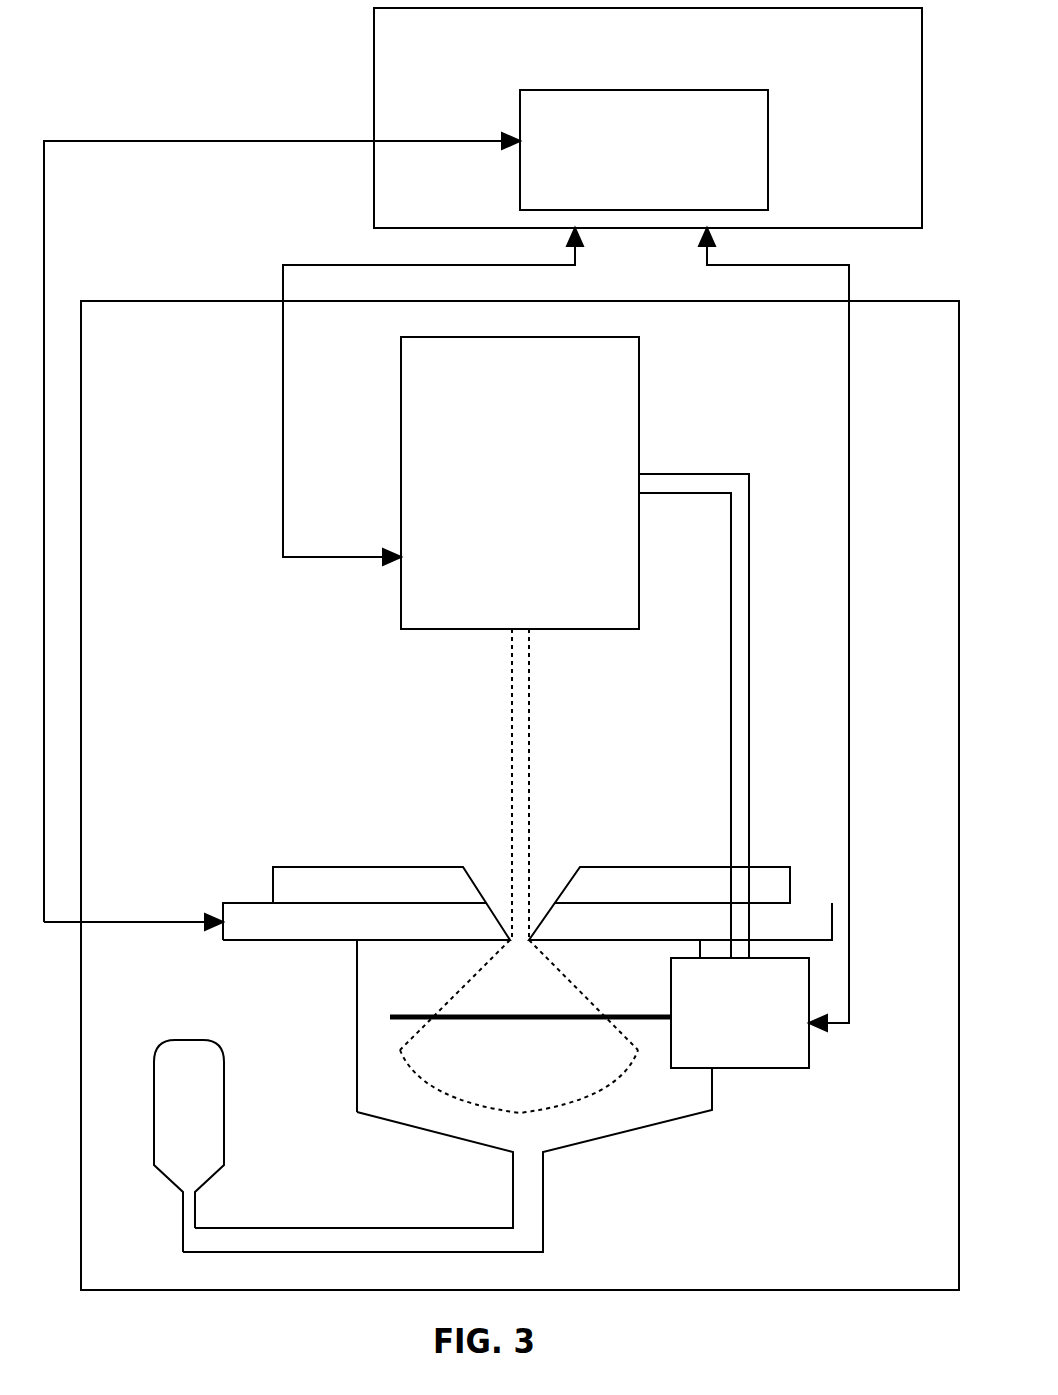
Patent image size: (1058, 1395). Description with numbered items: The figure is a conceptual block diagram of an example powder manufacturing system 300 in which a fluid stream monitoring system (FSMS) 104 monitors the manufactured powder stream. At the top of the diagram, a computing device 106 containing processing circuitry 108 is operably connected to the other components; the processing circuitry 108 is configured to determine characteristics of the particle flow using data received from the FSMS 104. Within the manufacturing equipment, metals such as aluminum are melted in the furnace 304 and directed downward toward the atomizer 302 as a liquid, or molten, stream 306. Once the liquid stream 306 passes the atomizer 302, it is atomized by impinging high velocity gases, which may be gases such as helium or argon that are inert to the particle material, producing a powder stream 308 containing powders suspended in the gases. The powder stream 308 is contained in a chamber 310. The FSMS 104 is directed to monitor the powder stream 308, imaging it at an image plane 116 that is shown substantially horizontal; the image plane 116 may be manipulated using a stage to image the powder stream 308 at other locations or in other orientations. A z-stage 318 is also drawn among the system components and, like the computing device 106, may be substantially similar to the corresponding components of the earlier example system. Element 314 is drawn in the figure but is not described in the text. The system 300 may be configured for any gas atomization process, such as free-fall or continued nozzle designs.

The powder manufacturing system 300 is at (138, 51).
The computing device 106 is at (630, 73).
The processing circuitry 108 is at (624, 191).
The atomizer 302 is at (204, 833).
The furnace 304 is at (501, 513).
The optical fiber 314 is at (512, 785).
The z-stage 318 is at (746, 537).
The fluid stream monitoring system 104 is at (721, 1041).
The image plane 116 is at (395, 1017).
The liquid stream 306 is at (405, 1068).
The powder stream 308 is at (673, 1123).
The chamber 310 is at (173, 1040).